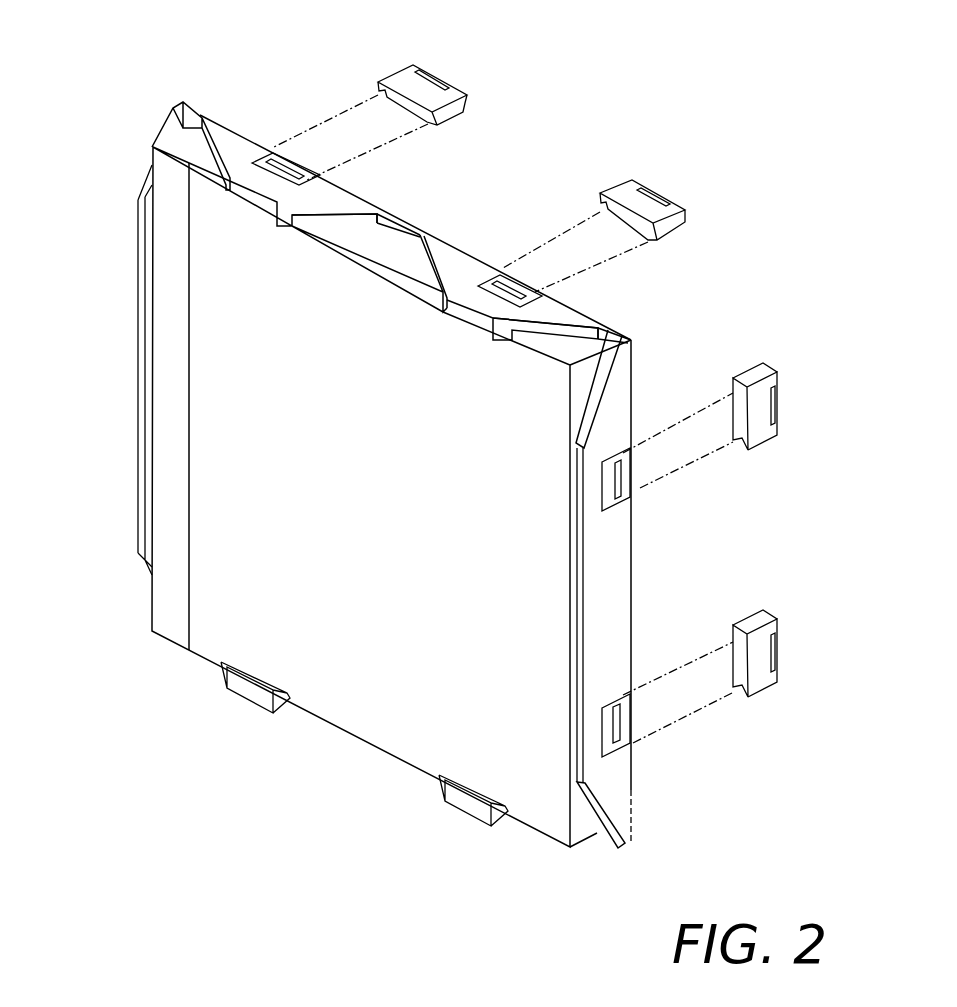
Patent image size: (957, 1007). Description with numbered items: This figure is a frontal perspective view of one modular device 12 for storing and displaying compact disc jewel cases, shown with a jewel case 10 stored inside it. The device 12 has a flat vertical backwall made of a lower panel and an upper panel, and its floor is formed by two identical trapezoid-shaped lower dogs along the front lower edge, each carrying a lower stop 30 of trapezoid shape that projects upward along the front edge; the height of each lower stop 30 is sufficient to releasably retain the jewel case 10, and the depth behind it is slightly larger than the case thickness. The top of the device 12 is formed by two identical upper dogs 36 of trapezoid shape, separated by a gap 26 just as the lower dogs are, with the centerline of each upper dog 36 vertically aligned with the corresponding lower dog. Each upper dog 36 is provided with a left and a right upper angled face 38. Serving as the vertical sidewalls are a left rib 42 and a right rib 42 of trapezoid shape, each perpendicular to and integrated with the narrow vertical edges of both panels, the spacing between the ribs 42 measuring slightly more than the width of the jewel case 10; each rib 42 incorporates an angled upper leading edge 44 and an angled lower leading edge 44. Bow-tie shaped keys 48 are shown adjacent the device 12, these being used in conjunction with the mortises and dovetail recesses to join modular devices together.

The jewel case 10 is at (172, 642).
The device 12 is at (632, 774).
The gap 26 is at (397, 233).
The lower stop 30 is at (258, 698).
The upper dog 36 is at (233, 148).
The upper angled face 38 is at (328, 212).
The rib 42 is at (137, 374).
The angled leading edge 44 is at (173, 120).
The key 48 is at (420, 62).